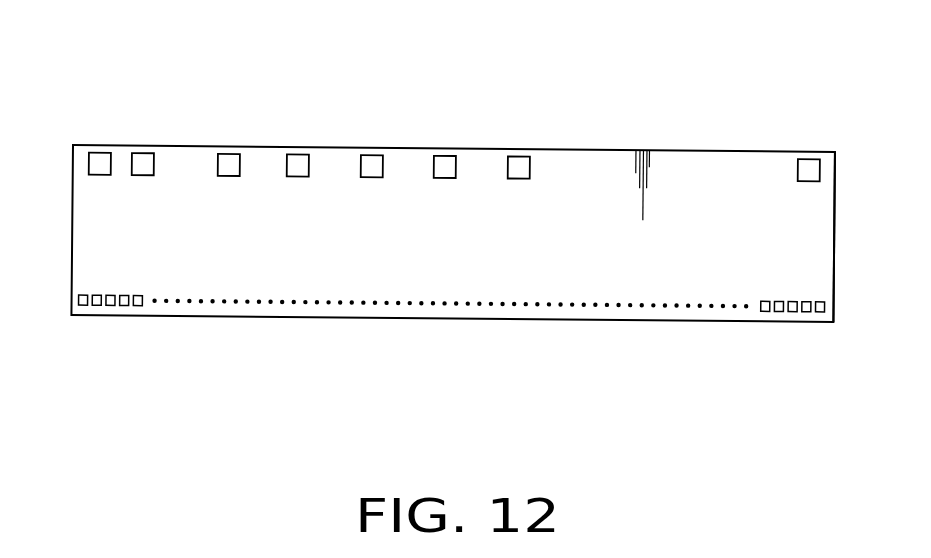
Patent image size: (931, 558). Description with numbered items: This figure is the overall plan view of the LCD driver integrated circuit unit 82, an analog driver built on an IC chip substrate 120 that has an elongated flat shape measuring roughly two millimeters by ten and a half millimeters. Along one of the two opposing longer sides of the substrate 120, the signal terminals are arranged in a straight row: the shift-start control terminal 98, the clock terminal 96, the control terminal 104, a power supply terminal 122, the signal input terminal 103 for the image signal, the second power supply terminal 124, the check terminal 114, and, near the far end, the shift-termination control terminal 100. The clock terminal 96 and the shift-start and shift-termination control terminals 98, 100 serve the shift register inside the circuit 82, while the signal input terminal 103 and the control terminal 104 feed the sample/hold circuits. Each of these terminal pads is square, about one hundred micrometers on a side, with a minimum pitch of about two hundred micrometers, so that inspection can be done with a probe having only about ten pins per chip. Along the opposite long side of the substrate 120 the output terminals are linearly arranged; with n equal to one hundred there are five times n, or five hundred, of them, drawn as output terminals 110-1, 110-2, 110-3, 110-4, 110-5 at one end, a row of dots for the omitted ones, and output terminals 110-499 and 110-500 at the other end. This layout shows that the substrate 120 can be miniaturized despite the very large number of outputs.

The integrated circuit unit 82 is at (686, 90).
The clock terminal 96 is at (145, 153).
The shift-start control terminal 98 is at (98, 153).
The shift-termination control terminal 100 is at (810, 160).
The signal input terminal 103 is at (376, 157).
The control terminal 104 is at (227, 155).
The check terminal 114 is at (522, 158).
The IC chip substrate 120 is at (835, 262).
The power supply terminal 122 is at (299, 156).
The power supply terminal 124 is at (447, 158).
The output terminal 110-1 is at (84, 305).
The output terminal 110-2 is at (98, 305).
The output terminal 110-3 is at (112, 305).
The output terminal 110-4 is at (125, 305).
The output terminal 110-5 is at (140, 305).
The output terminal 110-499 is at (807, 313).
The output terminal 110-500 is at (821, 313).